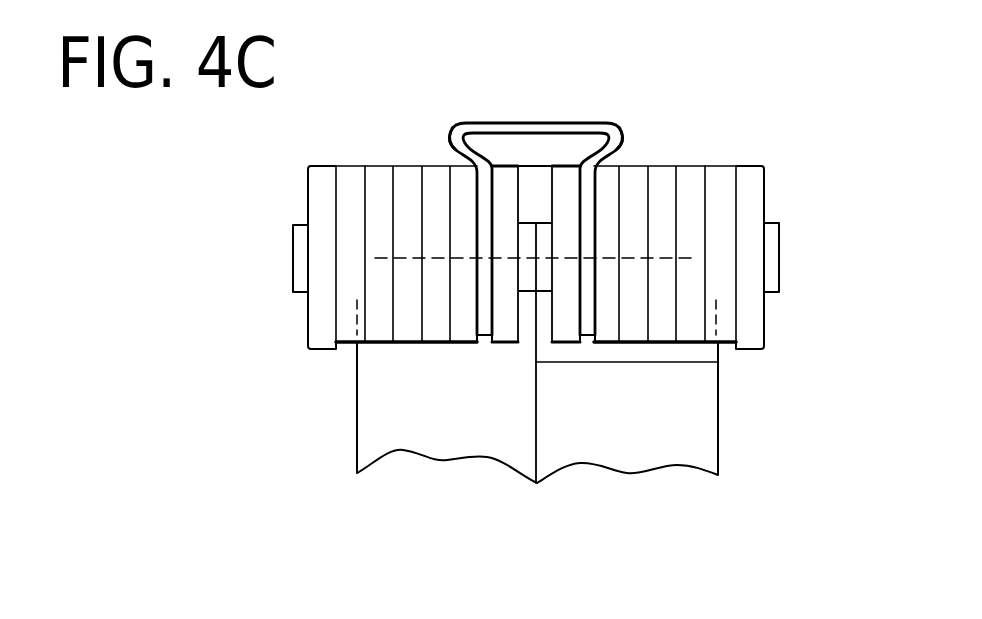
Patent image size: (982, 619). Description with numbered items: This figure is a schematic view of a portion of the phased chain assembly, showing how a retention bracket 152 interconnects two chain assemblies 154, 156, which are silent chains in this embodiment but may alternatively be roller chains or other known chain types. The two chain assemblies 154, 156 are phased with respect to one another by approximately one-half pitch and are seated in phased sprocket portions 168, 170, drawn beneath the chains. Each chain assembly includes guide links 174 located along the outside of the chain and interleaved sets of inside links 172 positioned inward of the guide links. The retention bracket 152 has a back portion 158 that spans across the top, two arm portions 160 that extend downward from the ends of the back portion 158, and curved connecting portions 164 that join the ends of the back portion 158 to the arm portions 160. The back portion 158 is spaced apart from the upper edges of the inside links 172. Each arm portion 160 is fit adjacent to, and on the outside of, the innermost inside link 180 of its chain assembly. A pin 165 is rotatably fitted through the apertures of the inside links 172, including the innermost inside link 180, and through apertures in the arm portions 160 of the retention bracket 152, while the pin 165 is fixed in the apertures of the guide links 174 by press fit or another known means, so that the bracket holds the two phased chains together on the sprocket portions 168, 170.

The retention bracket 152 is at (562, 90).
The chain assembly 154 is at (380, 107).
The chain assembly 156 is at (694, 122).
The back portion 158 is at (505, 122).
The arm portions 160 is at (483, 345).
The curved connecting portions 164 is at (451, 132).
The pin 165 is at (291, 256).
The phased sprocket portion 168 is at (373, 413).
The phased sprocket portion 170 is at (705, 415).
The inside links 172 is at (348, 177).
The guide links 174 is at (327, 177).
The innermost inside link 180 is at (507, 337).